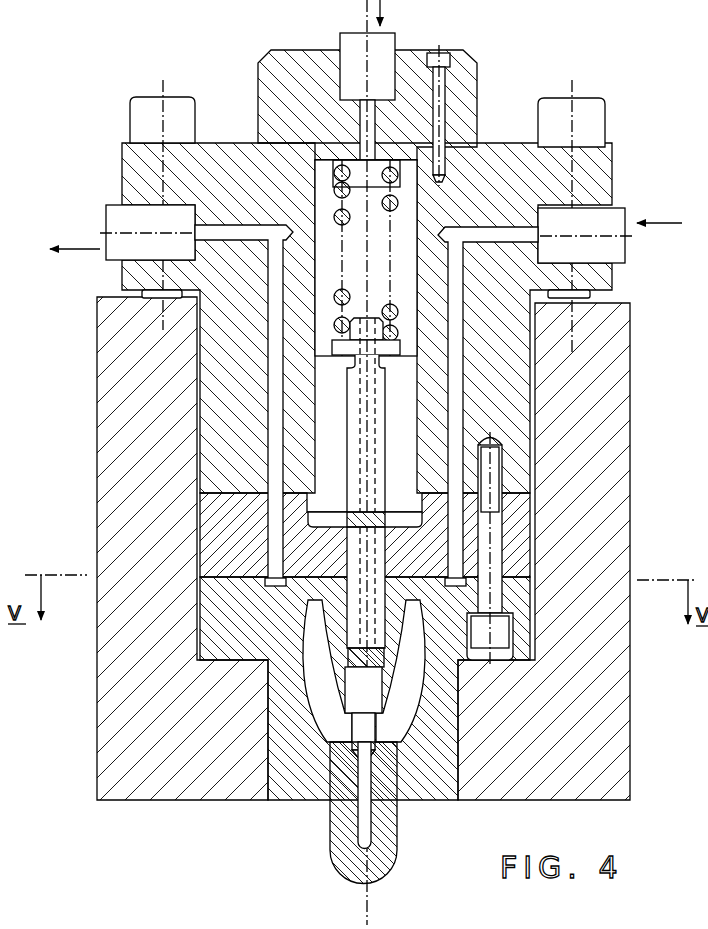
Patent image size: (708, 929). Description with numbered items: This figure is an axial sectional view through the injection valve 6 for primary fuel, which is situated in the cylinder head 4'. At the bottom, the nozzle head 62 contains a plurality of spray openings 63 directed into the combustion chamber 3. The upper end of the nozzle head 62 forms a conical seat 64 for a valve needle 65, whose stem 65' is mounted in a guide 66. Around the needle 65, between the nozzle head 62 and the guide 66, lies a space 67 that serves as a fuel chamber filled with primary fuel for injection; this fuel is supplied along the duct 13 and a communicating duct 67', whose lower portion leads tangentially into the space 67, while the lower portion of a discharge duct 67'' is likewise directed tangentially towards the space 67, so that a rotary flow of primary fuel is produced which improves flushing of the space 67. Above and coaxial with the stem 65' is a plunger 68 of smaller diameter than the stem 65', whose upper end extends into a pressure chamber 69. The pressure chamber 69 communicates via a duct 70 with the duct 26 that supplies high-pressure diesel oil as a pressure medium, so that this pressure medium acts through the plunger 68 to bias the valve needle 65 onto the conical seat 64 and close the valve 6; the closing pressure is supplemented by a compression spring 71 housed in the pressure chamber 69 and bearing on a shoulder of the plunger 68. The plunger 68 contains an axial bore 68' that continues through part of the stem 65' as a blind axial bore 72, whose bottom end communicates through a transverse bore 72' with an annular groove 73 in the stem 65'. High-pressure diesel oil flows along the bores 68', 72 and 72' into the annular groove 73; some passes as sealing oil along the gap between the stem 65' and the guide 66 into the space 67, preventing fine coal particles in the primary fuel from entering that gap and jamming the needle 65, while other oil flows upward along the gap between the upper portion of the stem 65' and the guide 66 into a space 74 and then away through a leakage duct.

The combustion chamber 3 is at (185, 850).
The cylinder head 4' is at (382, 548).
The injection valve 6 is at (323, 813).
The duct 13 is at (620, 218).
The duct 26 is at (387, 47).
The nozzle head 62 is at (373, 865).
The spray openings 63 is at (340, 848).
The conical seat 64 is at (373, 747).
The valve needle 65 is at (326, 739).
The stem 65' is at (363, 690).
The guide 66 is at (333, 662).
The space 67 is at (393, 731).
The communicating duct 67' is at (488, 406).
The discharge duct 67'' is at (244, 405).
The plunger 68 is at (394, 483).
The axial bore 68' is at (399, 462).
The pressure chamber 69 is at (404, 295).
The duct 70 is at (363, 136).
The compression spring 71 is at (348, 222).
The blind axial bore 72 is at (365, 535).
The transverse bore 72' is at (477, 575).
The annular groove 73 is at (332, 640).
The space 74 is at (328, 518).